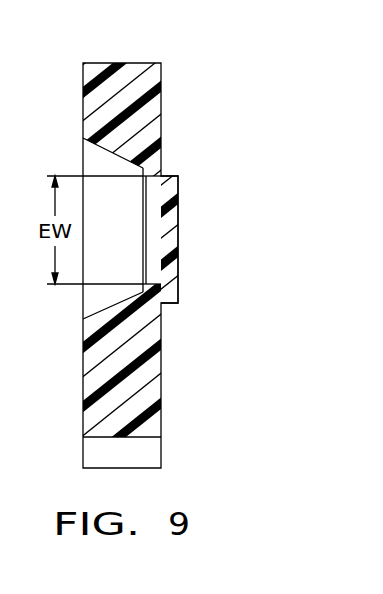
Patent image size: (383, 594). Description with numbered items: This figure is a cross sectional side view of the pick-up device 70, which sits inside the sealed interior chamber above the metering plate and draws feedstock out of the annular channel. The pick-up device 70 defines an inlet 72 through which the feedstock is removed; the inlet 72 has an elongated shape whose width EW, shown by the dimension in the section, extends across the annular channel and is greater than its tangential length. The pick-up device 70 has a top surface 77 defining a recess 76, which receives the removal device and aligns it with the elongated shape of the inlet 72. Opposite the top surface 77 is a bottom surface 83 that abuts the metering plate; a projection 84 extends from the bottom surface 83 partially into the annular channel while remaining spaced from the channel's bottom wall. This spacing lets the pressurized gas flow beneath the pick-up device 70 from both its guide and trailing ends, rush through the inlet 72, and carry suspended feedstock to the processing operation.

The pick-up device 70 is at (138, 63).
The bottom surface 83 is at (161, 117).
The recess 76 is at (111, 154).
The inlet 72 is at (145, 177).
The projection 84 is at (178, 245).
The top surface 77 is at (83, 362).